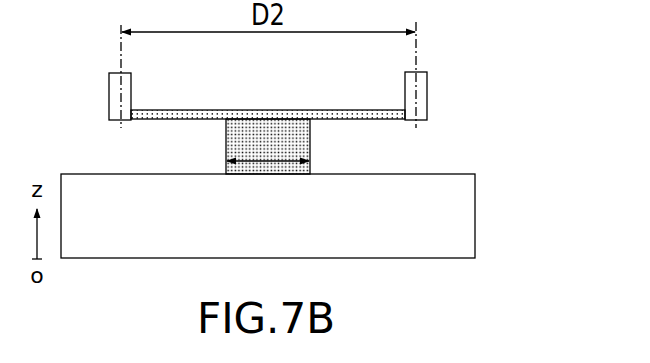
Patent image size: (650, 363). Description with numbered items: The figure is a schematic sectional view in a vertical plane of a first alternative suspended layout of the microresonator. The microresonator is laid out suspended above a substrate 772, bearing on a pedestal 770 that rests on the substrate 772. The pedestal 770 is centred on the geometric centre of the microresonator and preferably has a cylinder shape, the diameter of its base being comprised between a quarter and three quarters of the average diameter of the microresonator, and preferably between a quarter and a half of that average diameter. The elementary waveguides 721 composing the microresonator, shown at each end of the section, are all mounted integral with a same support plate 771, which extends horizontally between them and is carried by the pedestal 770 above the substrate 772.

The elementary waveguide 721 is at (115, 100).
The support plate 771 is at (340, 110).
The pedestal 770 is at (310, 130).
The substrate 772 is at (462, 191).